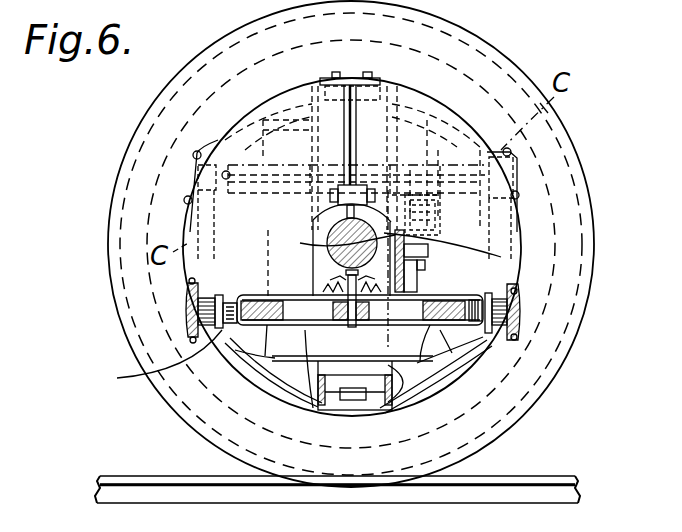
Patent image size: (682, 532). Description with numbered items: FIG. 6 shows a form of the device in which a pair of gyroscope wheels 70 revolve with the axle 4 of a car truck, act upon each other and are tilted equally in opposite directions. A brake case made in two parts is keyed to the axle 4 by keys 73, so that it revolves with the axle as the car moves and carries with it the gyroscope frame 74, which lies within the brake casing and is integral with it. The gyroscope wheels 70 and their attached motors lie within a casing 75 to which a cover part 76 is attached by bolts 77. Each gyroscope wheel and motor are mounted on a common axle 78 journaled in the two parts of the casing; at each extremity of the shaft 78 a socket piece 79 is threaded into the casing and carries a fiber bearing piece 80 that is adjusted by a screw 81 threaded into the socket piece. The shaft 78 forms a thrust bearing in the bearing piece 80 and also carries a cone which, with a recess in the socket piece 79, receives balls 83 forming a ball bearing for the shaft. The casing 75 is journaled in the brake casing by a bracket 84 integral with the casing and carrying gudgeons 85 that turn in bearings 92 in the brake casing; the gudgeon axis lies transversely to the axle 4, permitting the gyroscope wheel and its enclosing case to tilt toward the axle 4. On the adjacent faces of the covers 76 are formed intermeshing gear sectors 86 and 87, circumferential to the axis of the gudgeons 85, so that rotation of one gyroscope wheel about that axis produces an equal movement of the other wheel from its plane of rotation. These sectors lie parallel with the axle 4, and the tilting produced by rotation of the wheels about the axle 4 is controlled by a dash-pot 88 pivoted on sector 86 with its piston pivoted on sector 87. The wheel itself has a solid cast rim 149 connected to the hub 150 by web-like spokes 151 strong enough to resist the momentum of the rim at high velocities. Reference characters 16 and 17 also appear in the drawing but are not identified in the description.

The spherical shell 16 is at (521, 394).
The rail 17 is at (501, 483).
The axle 4 is at (350, 145).
The gyroscope wheels 70 is at (463, 347).
The keys 73 is at (323, 243).
The gyroscope frame 74 is at (290, 280).
The casing 75 is at (217, 131).
The cover part 76 is at (442, 261).
The bolts 77 is at (508, 336).
The axle 78 is at (352, 326).
The socket piece 79 is at (330, 247).
The fiber bearing piece 80 is at (335, 285).
The screw 81 is at (352, 414).
The balls 83 is at (318, 327).
The bracket 84 is at (200, 132).
The gudgeons 85 is at (187, 180).
The gear sector 86 is at (470, 175).
The gear sector 87 is at (408, 275).
The dash-pot 88 is at (441, 216).
The bearings 92 is at (190, 305).
The solid cast rim 149 is at (147, 372).
The hub 150 is at (338, 410).
The web-like spokes 151 is at (455, 414).